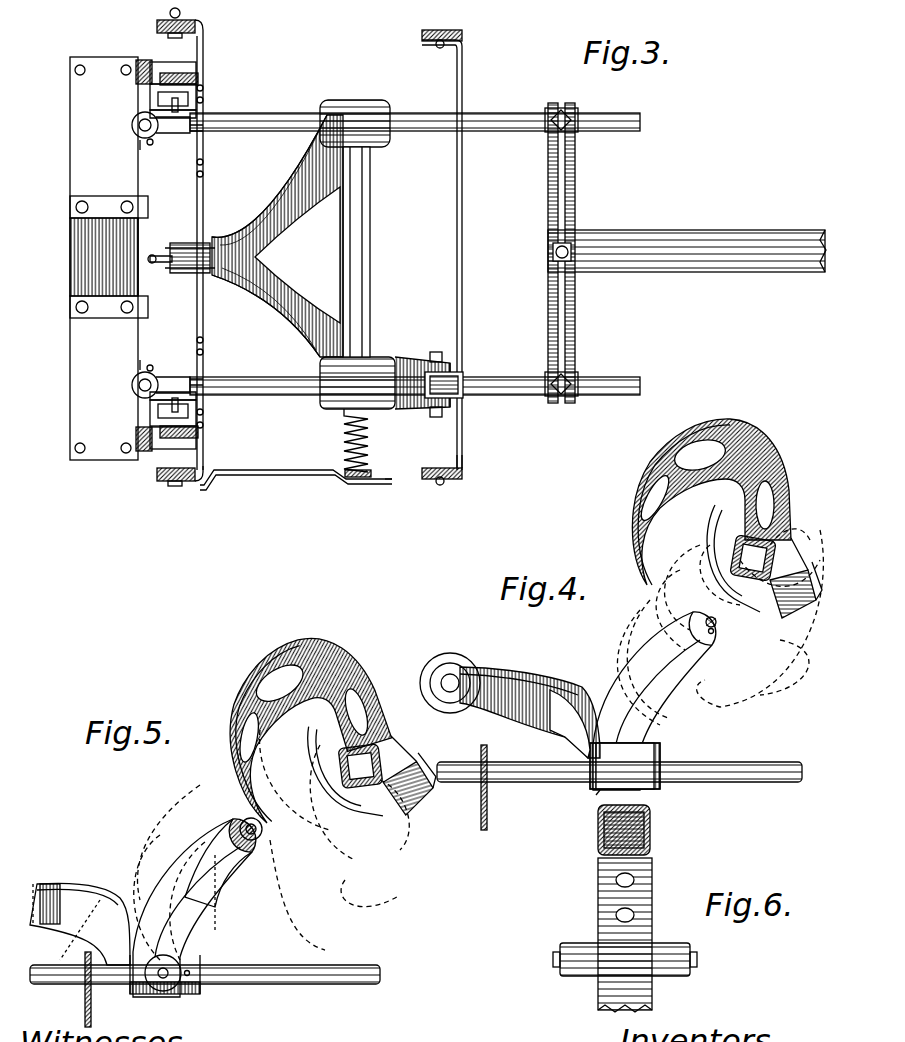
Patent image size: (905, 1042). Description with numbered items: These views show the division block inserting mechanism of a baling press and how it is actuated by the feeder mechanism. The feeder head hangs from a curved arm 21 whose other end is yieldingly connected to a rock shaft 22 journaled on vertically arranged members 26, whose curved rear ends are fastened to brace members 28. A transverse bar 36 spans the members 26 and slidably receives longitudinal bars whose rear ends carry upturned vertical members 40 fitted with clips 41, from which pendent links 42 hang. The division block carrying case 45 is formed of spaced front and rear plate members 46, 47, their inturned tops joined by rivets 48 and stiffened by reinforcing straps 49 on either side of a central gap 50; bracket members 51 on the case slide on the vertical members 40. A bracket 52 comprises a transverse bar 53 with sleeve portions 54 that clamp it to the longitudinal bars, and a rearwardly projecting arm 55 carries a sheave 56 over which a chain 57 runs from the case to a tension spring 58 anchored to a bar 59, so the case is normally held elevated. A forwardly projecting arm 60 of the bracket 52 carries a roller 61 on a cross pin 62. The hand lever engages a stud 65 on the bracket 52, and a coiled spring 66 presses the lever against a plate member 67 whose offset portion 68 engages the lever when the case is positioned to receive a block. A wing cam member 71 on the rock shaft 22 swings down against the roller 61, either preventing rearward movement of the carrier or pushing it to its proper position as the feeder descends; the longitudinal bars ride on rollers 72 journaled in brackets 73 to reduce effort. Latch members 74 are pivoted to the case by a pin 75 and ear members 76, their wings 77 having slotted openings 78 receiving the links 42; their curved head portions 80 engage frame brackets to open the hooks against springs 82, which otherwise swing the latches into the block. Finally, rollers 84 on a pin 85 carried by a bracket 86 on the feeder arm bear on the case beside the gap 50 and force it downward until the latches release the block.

In FIG. 6, the curved arm 21 is at (652, 862).
In FIG. 4, the rock shaft 22 is at (735, 552).
In FIG. 5, the rock shaft 22 is at (381, 755).
In FIG. 3, the vertically arranged members 26 is at (425, 30).
In FIG. 3, the brace members 28 is at (197, 22).
In FIG. 3, the transverse bar 36 is at (463, 258).
In FIG. 3, the upturned vertical members 40 is at (150, 145).
In FIG. 3, the clips 41 is at (132, 123).
In FIG. 3, the pendent links 42 is at (198, 108).
In FIG. 3, the division block carrying case 45 is at (70, 345).
In FIG. 3, the front plate member 46 is at (140, 232).
In FIG. 3, the rear plate member 47 is at (72, 230).
In FIG. 3, the rivets 48 is at (84, 66).
In FIG. 3, the reinforcing straps 49 is at (70, 200).
In FIG. 3, the gap 50 is at (72, 258).
In FIG. 3, the bracket members 51 is at (140, 145).
In FIG. 3, the bracket 52 is at (268, 190).
In FIG. 4, the bracket 52 is at (555, 688).
In FIG. 5, the bracket 52 is at (100, 893).
In FIG. 3, the transverse bar 53 is at (370, 255).
In FIG. 4, the transverse bar 53 is at (598, 792).
In FIG. 3, the sleeve portions 54 is at (365, 100).
In FIG. 4, the sleeve portions 54 is at (660, 790).
In FIG. 5, the sleeve portions 54 is at (183, 985).
In FIG. 3, the rearwardly projecting arm 55 is at (248, 285).
In FIG. 4, the rearwardly projecting arm 55 is at (515, 685).
In FIG. 5, the rearwardly projecting arm 55 is at (62, 890).
In FIG. 3, the sheave 56 is at (210, 240).
In FIG. 4, the sheave 56 is at (458, 656).
In FIG. 3, the chain 57 is at (150, 265).
In FIG. 4, the chain 57 is at (488, 810).
In FIG. 5, the chain 57 is at (92, 1018).
In FIG. 3, the tension spring 58 is at (495, 112).
In FIG. 4, the tension spring 58 is at (565, 782).
In FIG. 5, the tension spring 58 is at (330, 984).
In FIG. 3, the bar 59 is at (690, 240).
In FIG. 3, the forwardly projecting arm 60 is at (400, 358).
In FIG. 4, the forwardly projecting arm 60 is at (660, 726).
In FIG. 5, the forwardly projecting arm 60 is at (192, 908).
In FIG. 3, the roller 61 is at (466, 372).
In FIG. 4, the roller 61 is at (700, 620).
In FIG. 5, the roller 61 is at (220, 847).
In FIG. 3, the cross pin 62 is at (438, 350).
In FIG. 4, the cross pin 62 is at (722, 626).
In FIG. 5, the cross pin 62 is at (243, 854).
In FIG. 3, the stud 65 is at (345, 470).
In FIG. 4, the stud 65 is at (630, 765).
In FIG. 5, the stud 65 is at (188, 964).
In FIG. 3, the coiled spring 66 is at (368, 446).
In FIG. 3, the plate member 67 is at (272, 480).
In FIG. 3, the offset portion 68 is at (385, 484).
In FIG. 4, the wing cam member 71 is at (778, 448).
In FIG. 5, the wing cam member 71 is at (305, 717).
In FIG. 3, the rollers 72 is at (203, 140).
In FIG. 3, the brackets 73 is at (203, 165).
In FIG. 3, the latch members 74 is at (140, 62).
In FIG. 3, the pin 75 is at (165, 58).
In FIG. 3, the ear members 76 is at (160, 62).
In FIG. 3, the wings 77 is at (198, 72).
In FIG. 3, the slotted openings 78 is at (198, 85).
In FIG. 3, the curved head portions 80 is at (136, 78).
In FIG. 3, the springs 82 is at (179, 259).
In FIG. 6, the rollers 84 is at (582, 945).
In FIG. 3, the pin 85 is at (72, 288).
In FIG. 6, the pin 85 is at (553, 960).
In FIG. 6, the bracket 86 is at (598, 884).